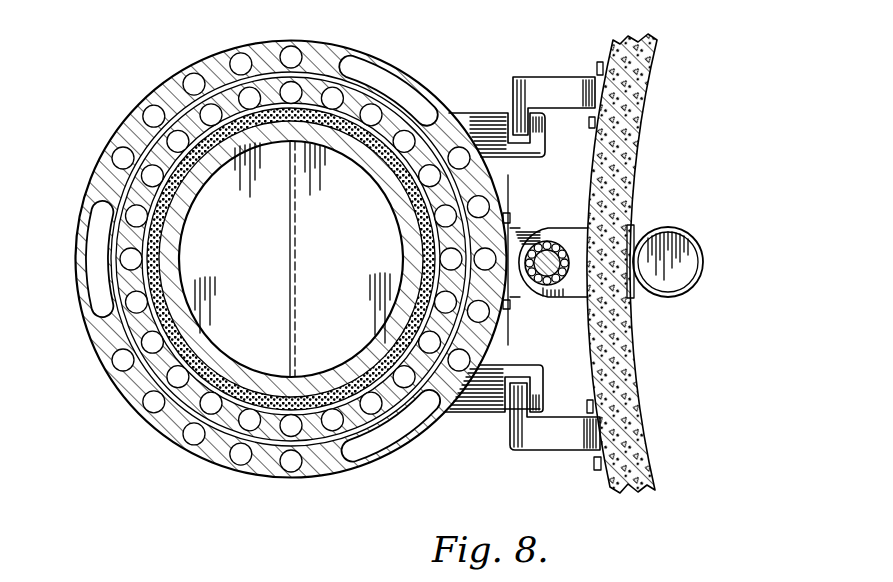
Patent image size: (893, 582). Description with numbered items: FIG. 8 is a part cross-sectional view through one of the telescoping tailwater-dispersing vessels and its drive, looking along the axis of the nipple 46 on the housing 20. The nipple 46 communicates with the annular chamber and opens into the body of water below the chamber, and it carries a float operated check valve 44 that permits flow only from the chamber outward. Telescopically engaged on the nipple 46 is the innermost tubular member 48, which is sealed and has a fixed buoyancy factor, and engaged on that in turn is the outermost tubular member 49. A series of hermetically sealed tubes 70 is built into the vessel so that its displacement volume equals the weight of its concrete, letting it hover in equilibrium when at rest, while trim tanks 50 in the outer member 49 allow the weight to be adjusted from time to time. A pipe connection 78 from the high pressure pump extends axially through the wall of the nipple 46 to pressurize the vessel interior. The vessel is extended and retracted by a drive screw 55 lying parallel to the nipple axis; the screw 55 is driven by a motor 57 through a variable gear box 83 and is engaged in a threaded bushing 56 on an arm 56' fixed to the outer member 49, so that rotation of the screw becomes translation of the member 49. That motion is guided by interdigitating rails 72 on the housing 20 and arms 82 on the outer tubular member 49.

The housing 20 is at (658, 68).
The float operated check valve 44 is at (258, 271).
The nipple 46 is at (188, 192).
The innermost tubular member 48 is at (182, 398).
The outermost tubular member 49 is at (128, 385).
The trim tanks 50 is at (405, 90).
The drive screw 55 is at (545, 277).
The bushing 56 is at (547, 236).
The arm 56' is at (513, 277).
The motor 57 is at (680, 258).
The hermetically sealed tubes 70 is at (290, 92).
The rails 72 is at (518, 130).
The pipe connection 78 is at (178, 236).
The arms 82 is at (512, 150).
The variable gear box 83 is at (567, 230).